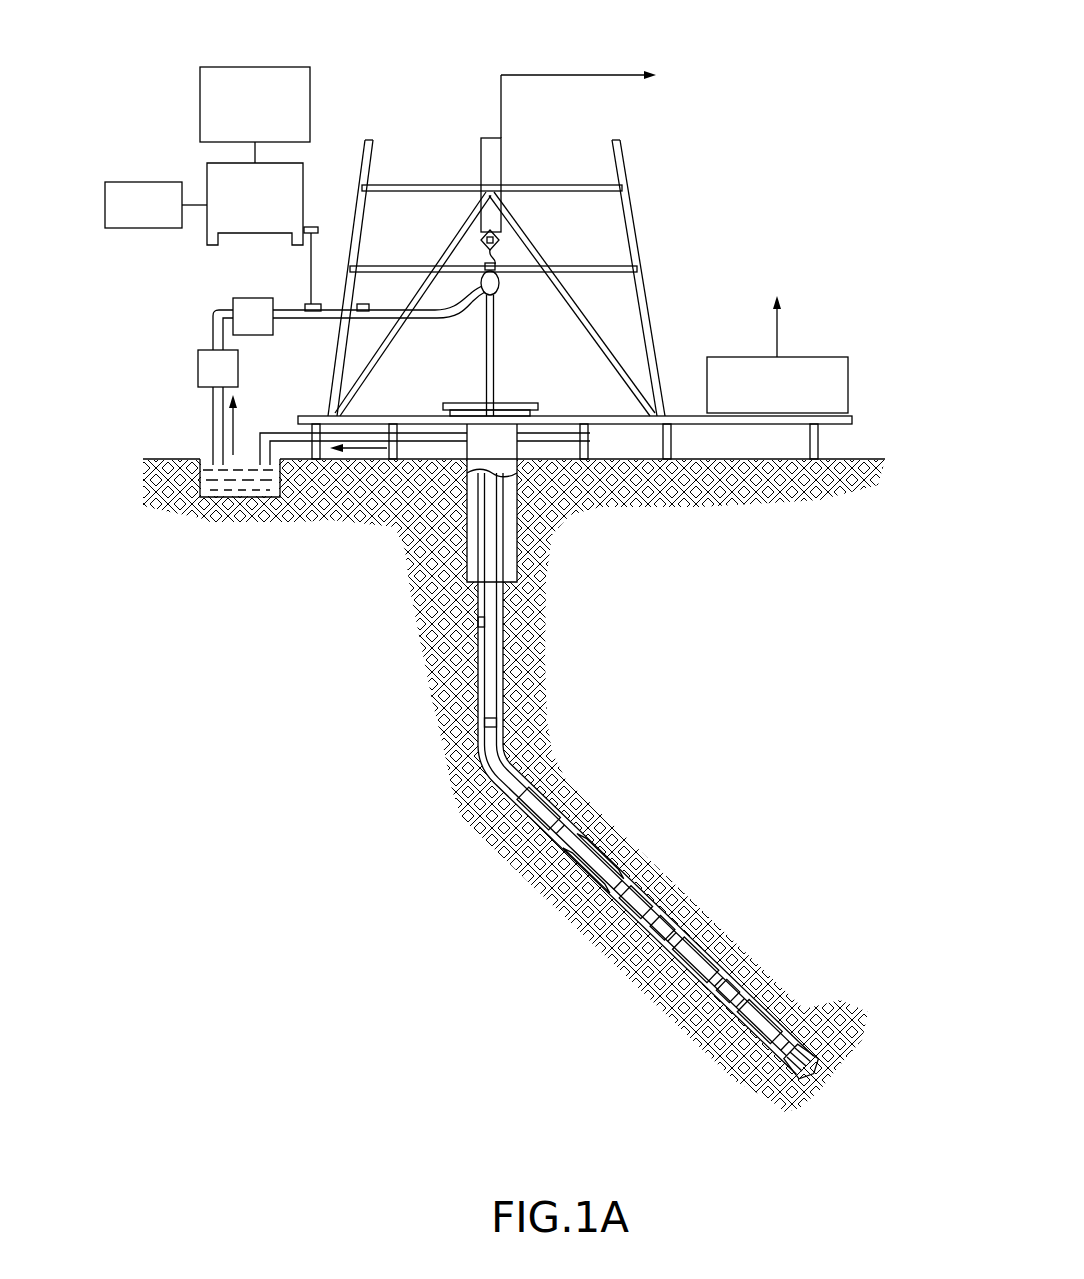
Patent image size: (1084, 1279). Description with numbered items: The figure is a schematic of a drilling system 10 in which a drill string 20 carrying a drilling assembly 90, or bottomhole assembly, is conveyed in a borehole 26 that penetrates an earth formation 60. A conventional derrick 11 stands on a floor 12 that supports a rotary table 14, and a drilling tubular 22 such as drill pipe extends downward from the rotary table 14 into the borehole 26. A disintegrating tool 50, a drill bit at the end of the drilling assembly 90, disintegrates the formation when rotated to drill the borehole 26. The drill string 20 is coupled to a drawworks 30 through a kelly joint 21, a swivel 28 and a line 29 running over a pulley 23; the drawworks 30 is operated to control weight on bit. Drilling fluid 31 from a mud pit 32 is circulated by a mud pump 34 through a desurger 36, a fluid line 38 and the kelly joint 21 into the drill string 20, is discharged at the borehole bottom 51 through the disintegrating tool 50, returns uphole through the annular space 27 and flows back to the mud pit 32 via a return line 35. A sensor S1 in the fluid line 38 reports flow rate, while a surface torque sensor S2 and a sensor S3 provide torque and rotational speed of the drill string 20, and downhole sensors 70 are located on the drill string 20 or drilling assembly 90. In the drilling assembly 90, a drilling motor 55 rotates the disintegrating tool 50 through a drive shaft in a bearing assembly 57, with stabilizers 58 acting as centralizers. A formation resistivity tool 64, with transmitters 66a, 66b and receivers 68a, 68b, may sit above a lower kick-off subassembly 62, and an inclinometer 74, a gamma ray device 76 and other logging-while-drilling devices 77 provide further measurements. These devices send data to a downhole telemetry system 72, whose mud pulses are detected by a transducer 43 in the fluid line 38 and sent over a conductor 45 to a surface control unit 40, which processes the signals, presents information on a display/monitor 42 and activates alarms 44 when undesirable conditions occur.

The drilling system 10 is at (411, 91).
The derrick 11 is at (638, 283).
The floor 12 is at (660, 410).
The rotary table 14 is at (512, 403).
The drill string 20 is at (505, 598).
The kelly joint 21 is at (495, 355).
The drilling tubular 22 is at (478, 650).
The pulley 23 is at (499, 262).
The borehole 26 is at (505, 745).
The annular space 27 is at (523, 775).
The swivel 28 is at (487, 296).
The line 29 is at (503, 168).
The drawworks 30 is at (832, 356).
The drilling fluid 31 is at (210, 485).
The mud pit 32 is at (265, 495).
The mud pump 34 is at (200, 362).
The return line 35 is at (432, 443).
The desurger 36 is at (242, 298).
The fluid line 38 is at (320, 322).
The surface control unit 40 is at (207, 175).
The display/monitor 42 is at (230, 64).
The transducer 43 is at (310, 300).
The alarms 44 is at (160, 232).
The conductor 45 is at (308, 226).
The disintegrating tool 50 is at (848, 1040).
The borehole bottom 51 is at (788, 1110).
The drilling motor 55 is at (642, 839).
The bearing assembly 57 is at (745, 1048).
The stabilizers 58 is at (672, 880).
The earth formation 60 is at (349, 827).
The lower kick-off subassembly 62 is at (767, 972).
The formation resistivity tool 64 is at (700, 986).
The transmitter 66a is at (640, 925).
The transmitter 66b is at (742, 1026).
The receiver 68a is at (680, 950).
The receiver 68b is at (706, 908).
The downhole sensors 70 is at (522, 818).
The downhole telemetry system 72 is at (488, 715).
The inclinometer 74 is at (727, 930).
The gamma ray device 76 is at (748, 948).
The logging-while-drilling devices 77 is at (562, 862).
The drilling assembly 90 is at (620, 809).
The sensor S1 is at (366, 303).
The surface torque sensor S2 is at (490, 360).
The sensor S3 is at (520, 405).